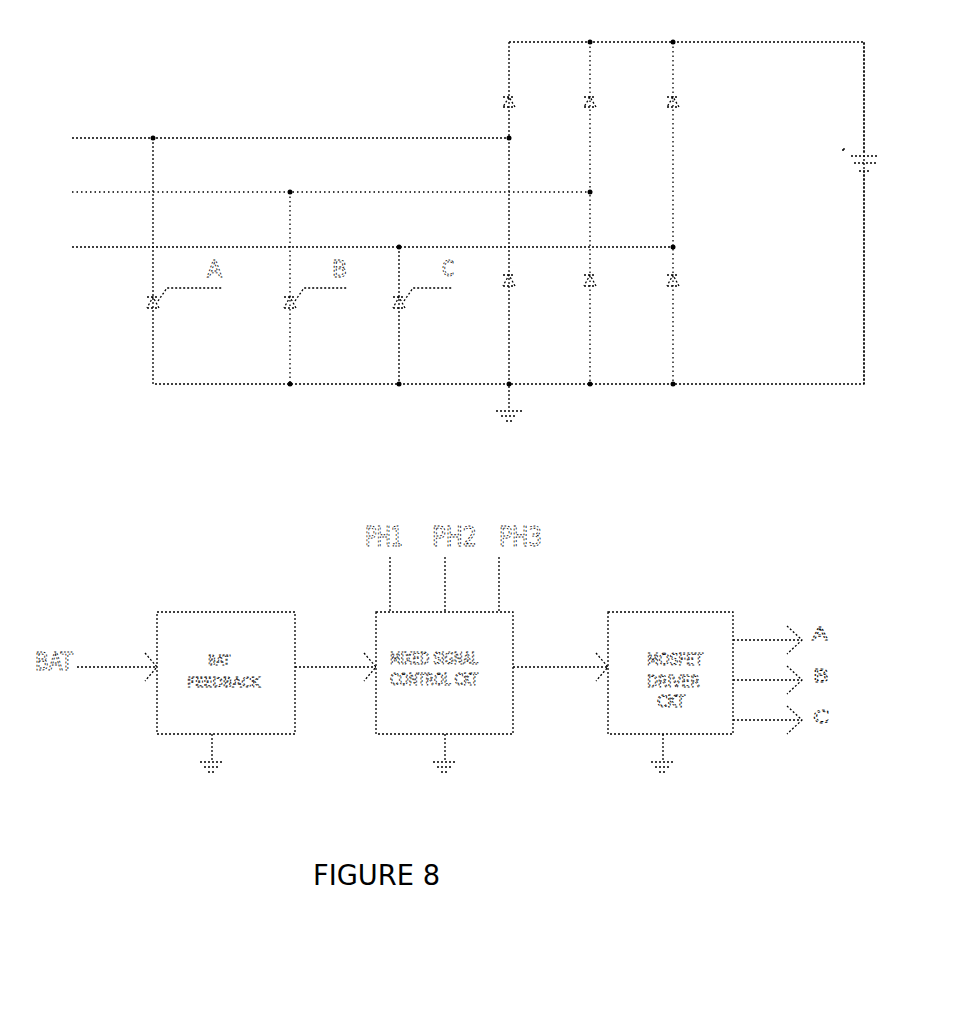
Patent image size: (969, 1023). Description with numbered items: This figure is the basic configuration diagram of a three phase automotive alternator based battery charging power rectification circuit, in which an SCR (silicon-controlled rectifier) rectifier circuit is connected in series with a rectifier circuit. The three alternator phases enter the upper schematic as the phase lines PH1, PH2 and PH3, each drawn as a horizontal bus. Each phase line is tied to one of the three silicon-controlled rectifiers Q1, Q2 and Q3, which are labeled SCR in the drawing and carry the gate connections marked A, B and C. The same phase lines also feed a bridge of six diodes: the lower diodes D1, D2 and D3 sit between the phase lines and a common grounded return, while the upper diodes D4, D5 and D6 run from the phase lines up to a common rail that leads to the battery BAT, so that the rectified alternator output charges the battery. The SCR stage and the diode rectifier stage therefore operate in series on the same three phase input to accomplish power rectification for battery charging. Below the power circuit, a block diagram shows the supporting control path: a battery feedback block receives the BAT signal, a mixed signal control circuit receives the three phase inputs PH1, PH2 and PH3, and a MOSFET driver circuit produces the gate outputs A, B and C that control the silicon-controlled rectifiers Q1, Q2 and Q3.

The phase 1 line PH1 is at (290, 121).
The phase 2 line PH2 is at (331, 176).
The phase 3 line PH3 is at (372, 231).
The battery BAT is at (845, 213).
The SCR Q1 is at (167, 291).
The SCR Q2 is at (298, 291).
The SCR Q3 is at (405, 291).
The diode D1 is at (520, 280).
The diode D2 is at (601, 280).
The diode D3 is at (684, 280).
The diode D4 is at (520, 101).
The diode D5 is at (601, 101).
The diode D6 is at (684, 101).